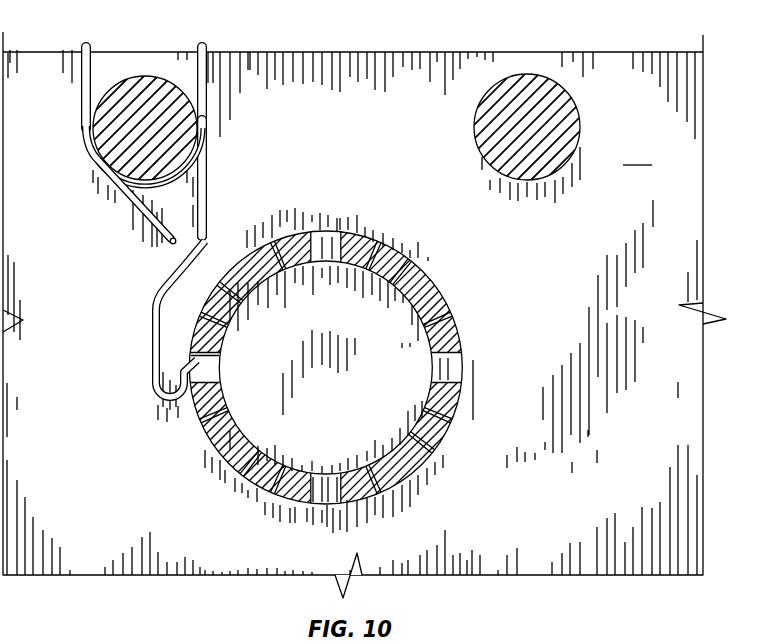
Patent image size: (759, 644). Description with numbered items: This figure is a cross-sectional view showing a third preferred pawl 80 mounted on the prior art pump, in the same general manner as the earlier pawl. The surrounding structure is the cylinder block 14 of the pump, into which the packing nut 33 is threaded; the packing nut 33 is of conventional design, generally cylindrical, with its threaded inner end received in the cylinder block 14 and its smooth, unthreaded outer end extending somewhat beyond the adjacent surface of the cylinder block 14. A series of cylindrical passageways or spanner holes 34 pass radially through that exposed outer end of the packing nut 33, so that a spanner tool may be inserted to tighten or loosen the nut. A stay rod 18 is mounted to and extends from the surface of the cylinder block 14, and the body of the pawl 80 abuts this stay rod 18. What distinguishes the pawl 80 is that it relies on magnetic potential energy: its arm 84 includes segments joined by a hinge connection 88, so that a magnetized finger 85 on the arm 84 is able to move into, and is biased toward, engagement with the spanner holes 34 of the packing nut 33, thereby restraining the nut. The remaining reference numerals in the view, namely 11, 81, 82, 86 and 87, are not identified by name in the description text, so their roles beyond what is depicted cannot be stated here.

The housing wall / body 11 is at (455, 53).
The cylinder block 14 is at (638, 154).
The stay rod 18 is at (100, 124).
The packing nut 33 is at (447, 337).
The spanner holes 34 is at (217, 357).
The third preferred pawl 80 is at (208, 190).
The curved tube portion 81 is at (83, 146).
The tube ends 82 is at (85, 43).
The arm 84 is at (150, 325).
The magnetized finger 85 is at (199, 378).
The branch tube 86 is at (110, 190).
The tube tip 87 is at (170, 244).
The hinge connection 88 is at (208, 240).